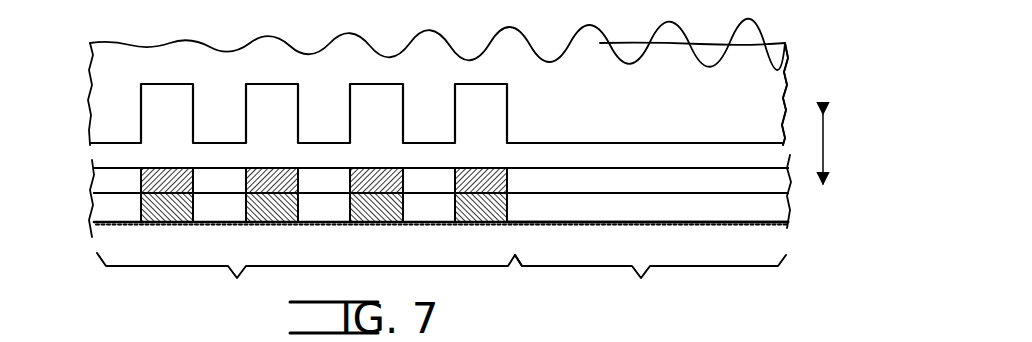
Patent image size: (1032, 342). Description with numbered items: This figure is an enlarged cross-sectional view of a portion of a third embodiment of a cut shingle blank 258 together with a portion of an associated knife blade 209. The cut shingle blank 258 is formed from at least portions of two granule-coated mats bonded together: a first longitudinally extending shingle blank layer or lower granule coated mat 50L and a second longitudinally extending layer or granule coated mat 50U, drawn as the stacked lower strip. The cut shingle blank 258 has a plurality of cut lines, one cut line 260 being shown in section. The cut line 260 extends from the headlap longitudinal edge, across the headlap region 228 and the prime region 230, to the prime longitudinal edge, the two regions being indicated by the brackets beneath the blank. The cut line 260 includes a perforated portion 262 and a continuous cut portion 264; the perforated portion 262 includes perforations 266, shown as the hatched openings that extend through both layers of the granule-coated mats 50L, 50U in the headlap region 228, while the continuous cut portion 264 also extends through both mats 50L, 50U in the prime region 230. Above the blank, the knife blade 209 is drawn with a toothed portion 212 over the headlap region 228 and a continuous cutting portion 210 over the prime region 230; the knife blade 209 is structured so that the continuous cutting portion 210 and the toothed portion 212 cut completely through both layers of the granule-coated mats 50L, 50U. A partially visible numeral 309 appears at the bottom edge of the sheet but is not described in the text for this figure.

The toothed portion 212 is at (85, 66).
The cut shingle blank 258 is at (68, 166).
The perforated portion 262 is at (300, 163).
The continuous cut portion 264 is at (692, 164).
The perforations 266 is at (227, 212).
The cut line 260 is at (86, 199).
The knife blade 209 is at (749, 40).
The continuous cutting portion 210 is at (755, 130).
The lower granule coated mat 50L is at (793, 178).
The granule coated mat 50U is at (794, 209).
The headlap region 228 is at (309, 280).
The prime region 230 is at (650, 281).
The partially visible numeral 309 is at (681, 340).